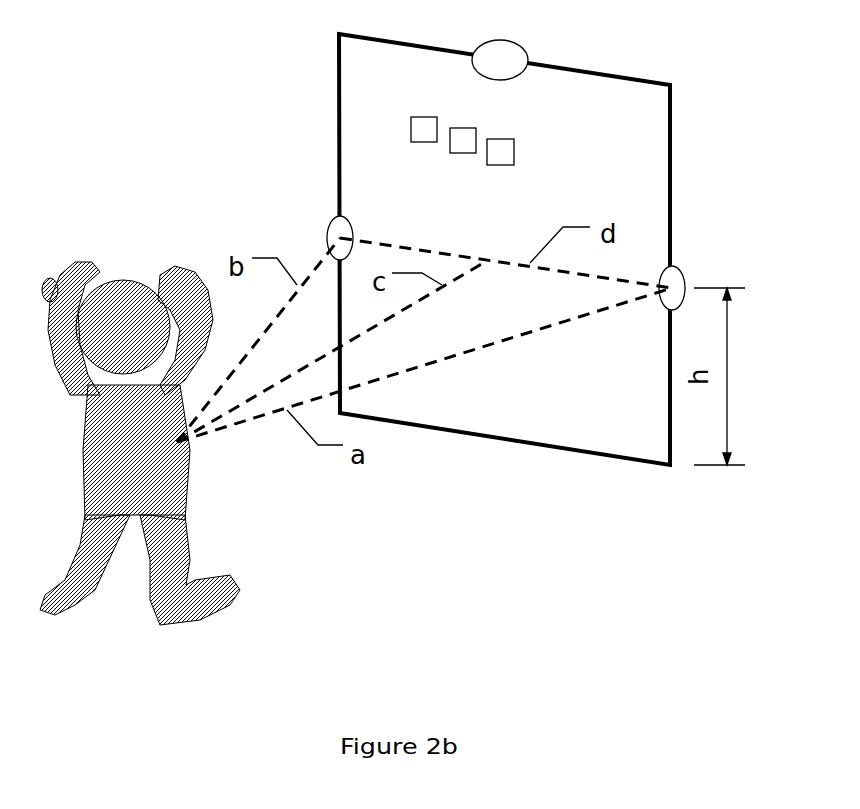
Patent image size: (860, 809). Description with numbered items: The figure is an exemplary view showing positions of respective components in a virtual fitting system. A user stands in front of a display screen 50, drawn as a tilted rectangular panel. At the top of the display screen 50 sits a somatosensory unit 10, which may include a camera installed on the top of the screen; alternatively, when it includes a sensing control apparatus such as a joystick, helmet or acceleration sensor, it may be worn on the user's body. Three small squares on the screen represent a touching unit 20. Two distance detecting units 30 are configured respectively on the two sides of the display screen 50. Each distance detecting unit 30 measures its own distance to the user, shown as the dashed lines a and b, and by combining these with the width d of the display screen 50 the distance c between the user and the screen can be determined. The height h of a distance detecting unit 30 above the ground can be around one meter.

The somatosensory unit 10 is at (510, 41).
The touching unit 20 is at (490, 165).
The distance detecting unit 30 is at (331, 222).
The display screen 50 is at (605, 70).